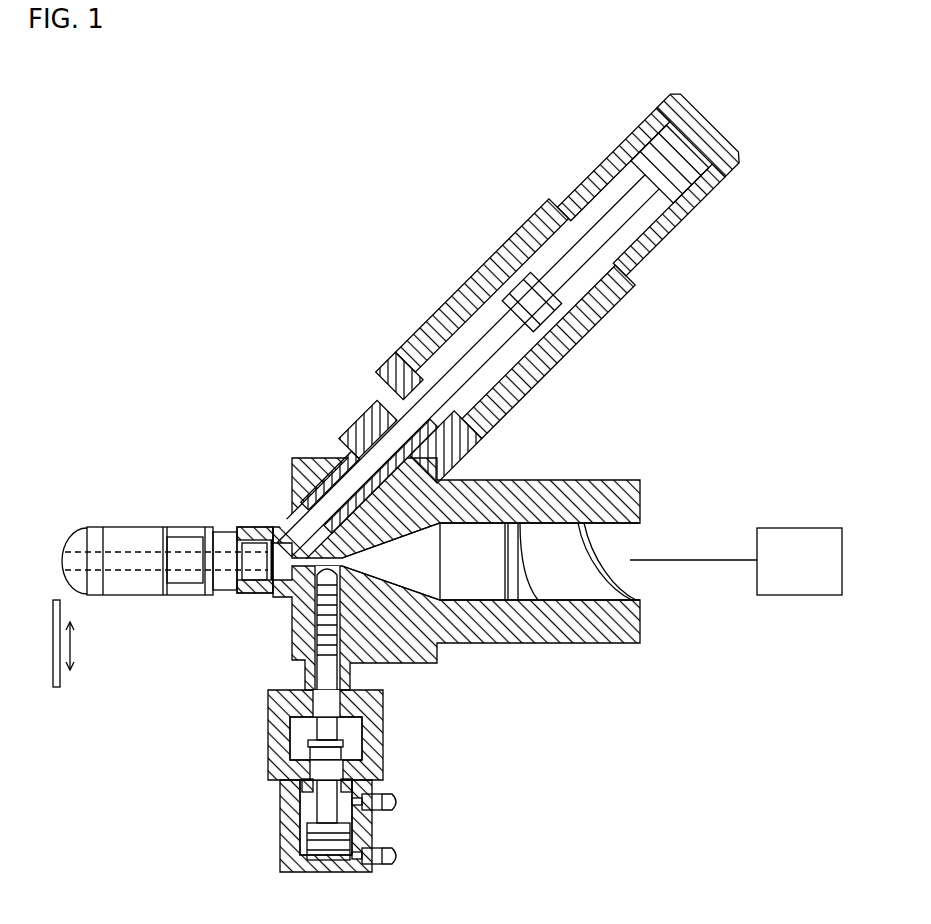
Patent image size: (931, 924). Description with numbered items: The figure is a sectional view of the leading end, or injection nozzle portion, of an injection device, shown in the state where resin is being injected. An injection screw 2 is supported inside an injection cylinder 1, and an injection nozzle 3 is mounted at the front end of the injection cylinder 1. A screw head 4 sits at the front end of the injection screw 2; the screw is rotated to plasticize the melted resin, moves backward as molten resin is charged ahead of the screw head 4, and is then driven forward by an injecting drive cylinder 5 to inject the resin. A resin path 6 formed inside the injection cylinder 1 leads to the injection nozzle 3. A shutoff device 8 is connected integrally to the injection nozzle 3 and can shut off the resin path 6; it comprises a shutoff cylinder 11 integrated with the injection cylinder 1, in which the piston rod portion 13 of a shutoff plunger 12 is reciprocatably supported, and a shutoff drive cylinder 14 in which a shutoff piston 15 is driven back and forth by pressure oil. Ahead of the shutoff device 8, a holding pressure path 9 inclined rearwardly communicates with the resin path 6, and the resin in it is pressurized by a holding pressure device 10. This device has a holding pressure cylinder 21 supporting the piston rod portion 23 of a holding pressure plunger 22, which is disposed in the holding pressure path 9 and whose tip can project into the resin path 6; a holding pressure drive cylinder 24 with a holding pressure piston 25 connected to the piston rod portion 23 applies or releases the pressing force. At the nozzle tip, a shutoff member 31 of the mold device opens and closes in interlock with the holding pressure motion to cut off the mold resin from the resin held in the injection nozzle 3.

The injection cylinder 1 is at (441, 685).
The injection screw 2 is at (533, 600).
The injection nozzle 3 is at (138, 540).
The screw head 4 is at (418, 580).
The injecting drive cylinder 5 is at (792, 583).
The resin path 6 is at (290, 560).
The shutoff device 8 is at (254, 710).
The holding pressure path 9 is at (292, 484).
The holding pressure device 10 is at (551, 388).
The shutoff cylinder 11 is at (378, 740).
The shutoff plunger 12 is at (325, 583).
The piston rod portion 13 is at (305, 787).
The shutoff drive cylinder 14 is at (290, 818).
The shutoff piston 15 is at (305, 852).
The holding pressure cylinder 21 is at (470, 438).
The holding pressure plunger 22 is at (347, 442).
The piston rod portion 23 is at (470, 375).
The holding pressure drive cylinder 24 is at (620, 272).
The holding pressure piston 25 is at (647, 147).
The shutoff member 31 is at (60, 682).